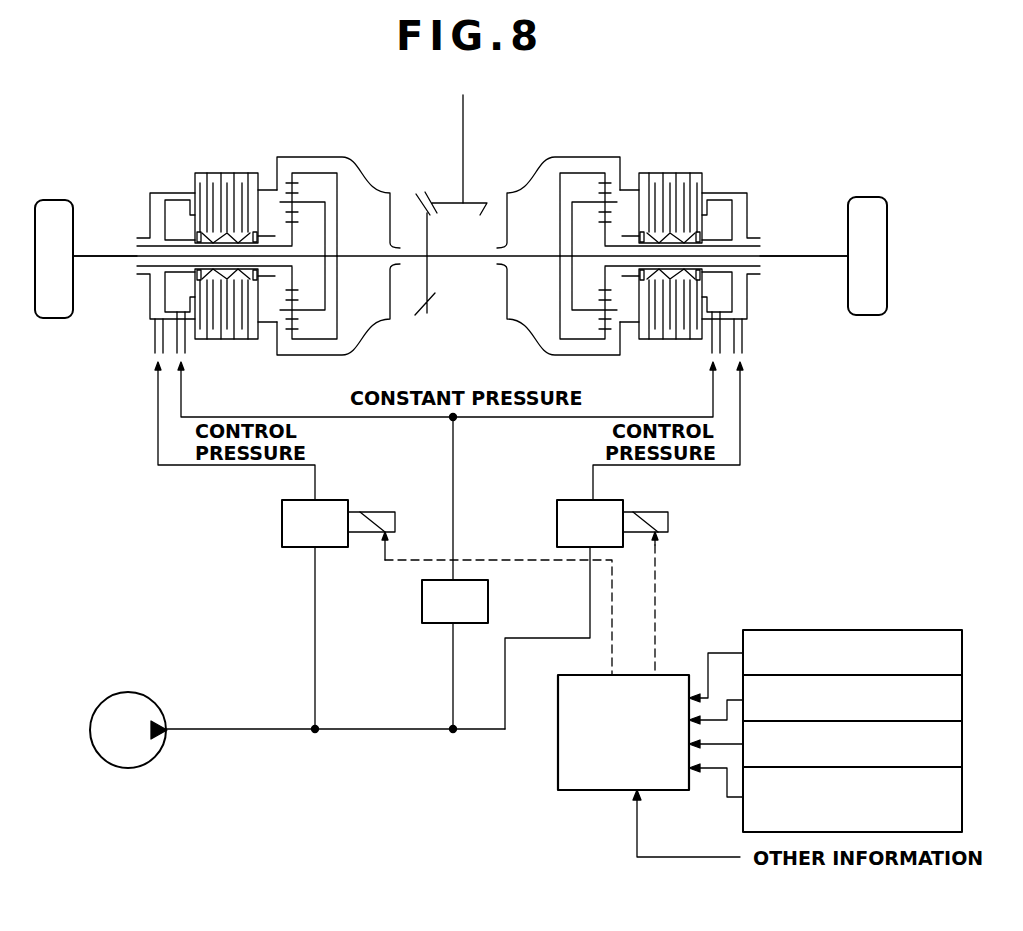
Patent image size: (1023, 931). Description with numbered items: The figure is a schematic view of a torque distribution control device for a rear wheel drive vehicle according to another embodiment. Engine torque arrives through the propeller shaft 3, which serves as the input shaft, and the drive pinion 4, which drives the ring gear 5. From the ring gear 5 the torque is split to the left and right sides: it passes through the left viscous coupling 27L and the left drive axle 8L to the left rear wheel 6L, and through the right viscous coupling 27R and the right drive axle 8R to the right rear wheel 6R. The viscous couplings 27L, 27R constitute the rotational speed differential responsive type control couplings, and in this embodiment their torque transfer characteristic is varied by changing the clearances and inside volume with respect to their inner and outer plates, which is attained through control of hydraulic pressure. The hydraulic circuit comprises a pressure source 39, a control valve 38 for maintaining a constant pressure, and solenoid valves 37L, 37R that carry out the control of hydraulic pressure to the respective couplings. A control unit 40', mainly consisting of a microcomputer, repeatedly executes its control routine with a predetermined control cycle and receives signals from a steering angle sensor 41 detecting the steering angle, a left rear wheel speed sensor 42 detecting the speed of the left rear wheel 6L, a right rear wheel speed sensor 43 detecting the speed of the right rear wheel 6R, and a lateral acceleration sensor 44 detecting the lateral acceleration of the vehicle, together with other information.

The propeller shaft 3 is at (463, 113).
The drive pinion 4 is at (489, 199).
The ring gear 5 is at (435, 295).
The left rear wheel 6L is at (63, 200).
The right rear wheel 6R is at (874, 197).
The left drive axle 8L is at (101, 260).
The right drive axle 8R is at (802, 260).
The viscous coupling 27L is at (250, 155).
The viscous coupling 27R is at (620, 152).
The solenoid valve 37L is at (333, 500).
The solenoid valve 37R is at (582, 500).
The control valve 38 is at (490, 593).
The pressure source 39 is at (152, 700).
The control unit 40' is at (632, 696).
The steering angle sensor 41 is at (963, 652).
The left rear wheel speed sensor 42 is at (963, 698).
The right rear wheel speed sensor 43 is at (963, 752).
The lateral acceleration sensor 44 is at (963, 798).